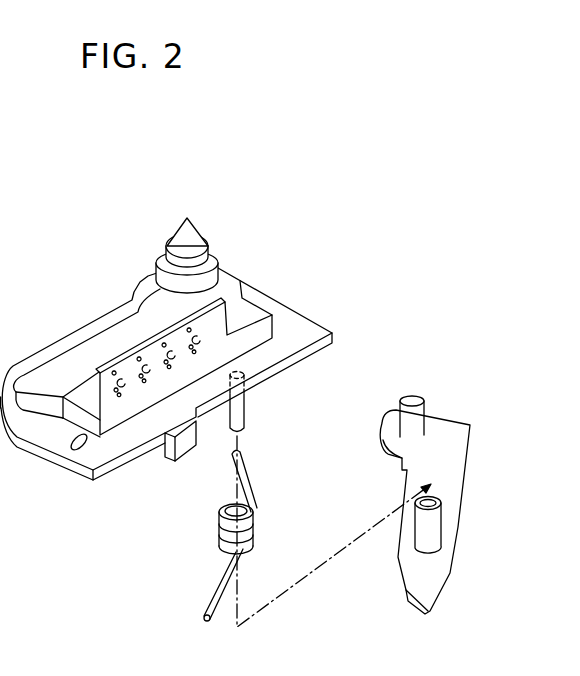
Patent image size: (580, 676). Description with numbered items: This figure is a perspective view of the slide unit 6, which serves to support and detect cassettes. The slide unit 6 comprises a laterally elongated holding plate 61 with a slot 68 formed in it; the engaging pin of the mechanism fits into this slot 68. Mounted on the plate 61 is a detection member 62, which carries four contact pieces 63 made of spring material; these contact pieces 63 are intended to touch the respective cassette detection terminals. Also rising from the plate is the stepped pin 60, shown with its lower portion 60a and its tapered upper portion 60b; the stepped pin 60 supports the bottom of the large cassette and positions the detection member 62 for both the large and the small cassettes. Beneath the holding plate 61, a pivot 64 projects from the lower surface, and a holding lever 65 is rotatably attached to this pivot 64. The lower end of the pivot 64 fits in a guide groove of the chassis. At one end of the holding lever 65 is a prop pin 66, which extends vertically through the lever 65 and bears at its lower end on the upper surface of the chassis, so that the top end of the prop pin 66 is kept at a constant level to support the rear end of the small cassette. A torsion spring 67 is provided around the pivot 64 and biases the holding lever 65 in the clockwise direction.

The slide unit 6 is at (95, 294).
The stepped pin 60 is at (139, 216).
The cylindrical base of boss 60a is at (163, 250).
The conical tip of boss 60b is at (211, 247).
The holding plate 61 is at (295, 332).
The detection member 62 is at (250, 318).
The contact pieces 63 is at (110, 372).
The pivot 64 is at (246, 412).
The holding lever 65 is at (458, 490).
The prop pin 66 is at (420, 430).
The torsion spring 67 is at (248, 556).
The slot 68 is at (80, 453).